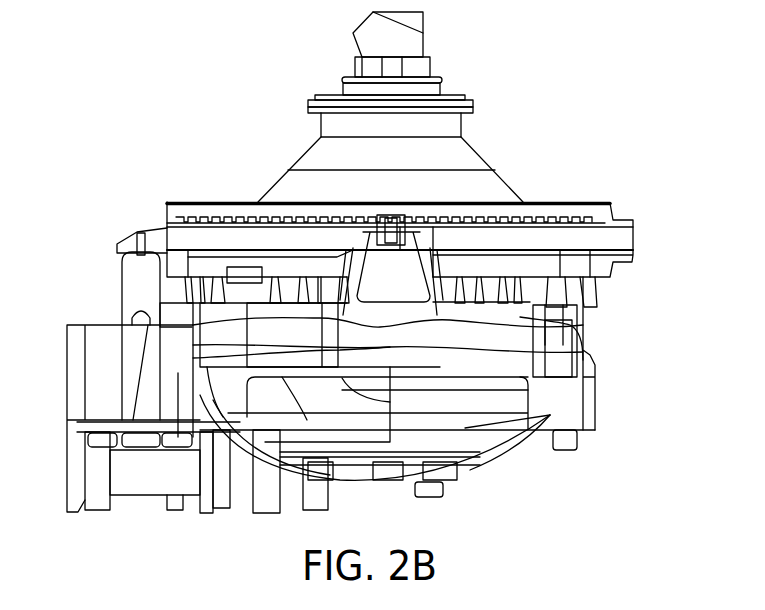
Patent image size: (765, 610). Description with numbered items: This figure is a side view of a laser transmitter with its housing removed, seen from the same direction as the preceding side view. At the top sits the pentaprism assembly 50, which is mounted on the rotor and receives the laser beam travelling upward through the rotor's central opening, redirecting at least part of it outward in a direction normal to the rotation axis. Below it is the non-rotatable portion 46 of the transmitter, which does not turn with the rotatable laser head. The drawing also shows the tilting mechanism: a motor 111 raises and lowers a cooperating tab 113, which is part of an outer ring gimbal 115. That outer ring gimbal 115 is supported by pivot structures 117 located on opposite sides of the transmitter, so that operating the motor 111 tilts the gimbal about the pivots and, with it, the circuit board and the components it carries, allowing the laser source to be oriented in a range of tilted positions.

The pentaprism assembly 50 is at (385, 35).
The non-rotatable portion 46 is at (475, 157).
The outer ring gimbal 115 is at (622, 237).
The pivot structures 117 is at (373, 278).
The cooperating tab 113 is at (127, 238).
The motor 111 is at (130, 278).